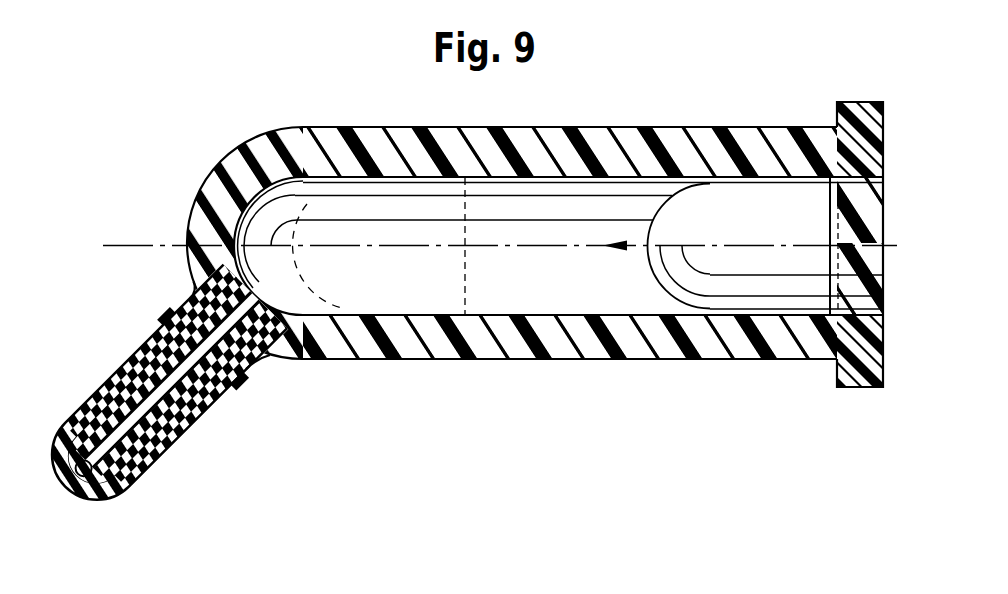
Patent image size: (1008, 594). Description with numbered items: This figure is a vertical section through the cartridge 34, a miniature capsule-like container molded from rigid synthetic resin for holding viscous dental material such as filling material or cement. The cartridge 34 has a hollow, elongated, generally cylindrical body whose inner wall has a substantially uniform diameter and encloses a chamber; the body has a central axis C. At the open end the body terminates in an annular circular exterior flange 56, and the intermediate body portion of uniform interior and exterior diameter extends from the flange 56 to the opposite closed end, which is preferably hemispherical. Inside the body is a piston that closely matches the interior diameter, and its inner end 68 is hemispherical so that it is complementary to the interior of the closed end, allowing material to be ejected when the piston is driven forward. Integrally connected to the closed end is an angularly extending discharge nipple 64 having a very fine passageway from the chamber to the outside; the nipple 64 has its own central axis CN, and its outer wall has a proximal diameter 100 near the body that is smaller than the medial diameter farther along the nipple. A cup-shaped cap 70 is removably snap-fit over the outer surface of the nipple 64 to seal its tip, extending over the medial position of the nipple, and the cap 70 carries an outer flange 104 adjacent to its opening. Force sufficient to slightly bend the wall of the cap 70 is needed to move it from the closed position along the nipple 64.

The cartridge 34 is at (586, 127).
The annular flange 56 is at (857, 102).
The inner end of the piston 68 is at (662, 268).
The discharge nipple 64 is at (140, 367).
The cap 70 is at (160, 468).
The proximal diameter 100 is at (198, 313).
The outer flange 104 is at (242, 382).
The central axis C is at (148, 243).
The central axis of the nipple CN is at (62, 491).